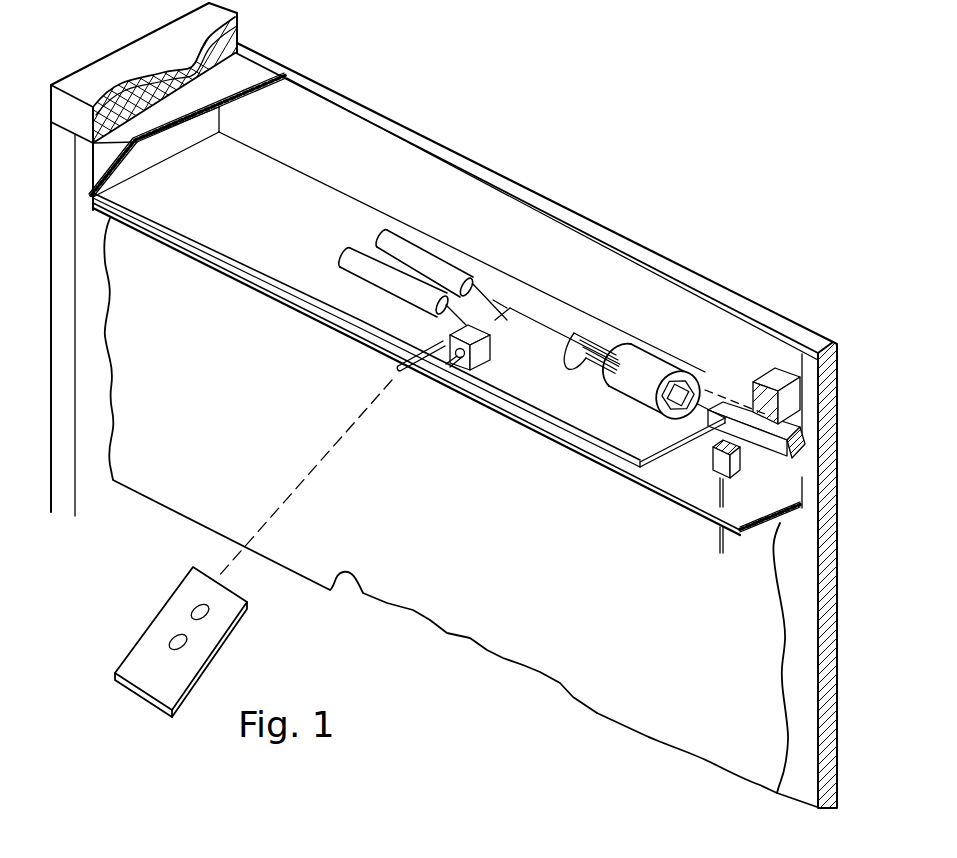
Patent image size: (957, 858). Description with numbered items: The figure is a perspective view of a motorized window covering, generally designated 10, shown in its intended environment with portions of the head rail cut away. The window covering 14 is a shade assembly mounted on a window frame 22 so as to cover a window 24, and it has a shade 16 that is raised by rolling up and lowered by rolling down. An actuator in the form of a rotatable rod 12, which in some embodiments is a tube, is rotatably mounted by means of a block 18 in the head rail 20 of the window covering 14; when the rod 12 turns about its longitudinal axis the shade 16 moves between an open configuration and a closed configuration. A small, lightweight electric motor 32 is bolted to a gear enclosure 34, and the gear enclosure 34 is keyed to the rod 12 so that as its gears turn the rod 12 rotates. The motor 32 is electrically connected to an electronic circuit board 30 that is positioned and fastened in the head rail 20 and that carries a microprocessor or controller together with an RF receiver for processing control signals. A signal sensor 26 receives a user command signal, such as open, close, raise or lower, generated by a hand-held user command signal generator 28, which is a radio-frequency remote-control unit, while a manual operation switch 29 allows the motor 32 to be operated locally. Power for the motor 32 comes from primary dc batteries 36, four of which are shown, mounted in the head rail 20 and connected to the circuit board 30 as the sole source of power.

The motorized window covering 10 is at (617, 176).
The rotatable rod 12 is at (785, 438).
The window covering 14 is at (477, 673).
The shade 16 is at (782, 645).
The block 18 is at (785, 378).
The head rail 20 is at (783, 498).
The window frame 22 is at (62, 243).
The window 24 is at (790, 787).
The signal sensor 26 is at (387, 370).
The hand-held user command signal generator 28 is at (182, 598).
The manual operation switch 29 is at (467, 370).
The electronic circuit board 30 is at (583, 413).
The electric motor 32 is at (610, 345).
The gear enclosure 34 is at (653, 363).
The primary dc batteries 36 is at (398, 242).